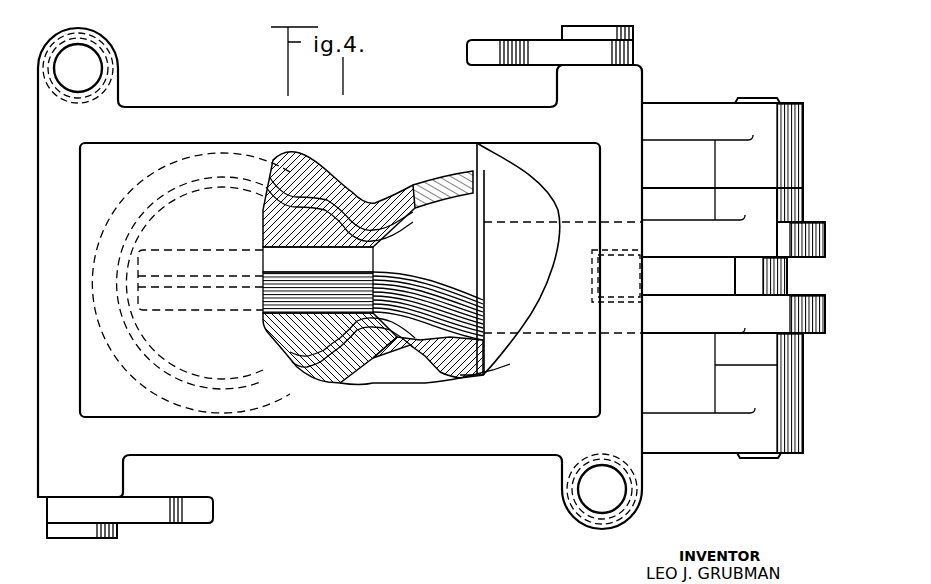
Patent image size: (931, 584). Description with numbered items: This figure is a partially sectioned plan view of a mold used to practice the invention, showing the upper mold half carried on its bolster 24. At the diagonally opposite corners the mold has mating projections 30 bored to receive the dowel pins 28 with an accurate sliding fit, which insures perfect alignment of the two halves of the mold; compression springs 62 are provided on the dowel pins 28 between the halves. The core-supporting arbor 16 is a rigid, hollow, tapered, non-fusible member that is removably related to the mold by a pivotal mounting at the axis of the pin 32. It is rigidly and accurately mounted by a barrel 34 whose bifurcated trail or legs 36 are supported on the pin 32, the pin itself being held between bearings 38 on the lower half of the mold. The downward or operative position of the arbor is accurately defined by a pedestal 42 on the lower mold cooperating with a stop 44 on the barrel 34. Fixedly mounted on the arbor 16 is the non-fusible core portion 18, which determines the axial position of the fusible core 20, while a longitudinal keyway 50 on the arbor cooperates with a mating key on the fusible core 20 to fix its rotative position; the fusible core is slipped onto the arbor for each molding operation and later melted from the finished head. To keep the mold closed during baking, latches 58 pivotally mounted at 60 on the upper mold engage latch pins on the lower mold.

The core-supporting arbor 16 is at (280, 315).
The non-fusible core portion 18 is at (455, 345).
The fusible core 20 is at (318, 340).
The bolster 24 is at (452, 436).
The dowel pins 28 is at (83, 61).
The mating projections 30 is at (38, 88).
The pin 32 is at (760, 458).
The barrel 34 is at (536, 237).
The legs 36 is at (668, 236).
The bearings 38 is at (728, 121).
The pedestal 42 is at (593, 286).
The stop 44 is at (612, 250).
The keyway 50 is at (293, 283).
The latches 58 is at (527, 50).
The latch pivot 60 is at (596, 28).
The compression springs 62 is at (110, 63).